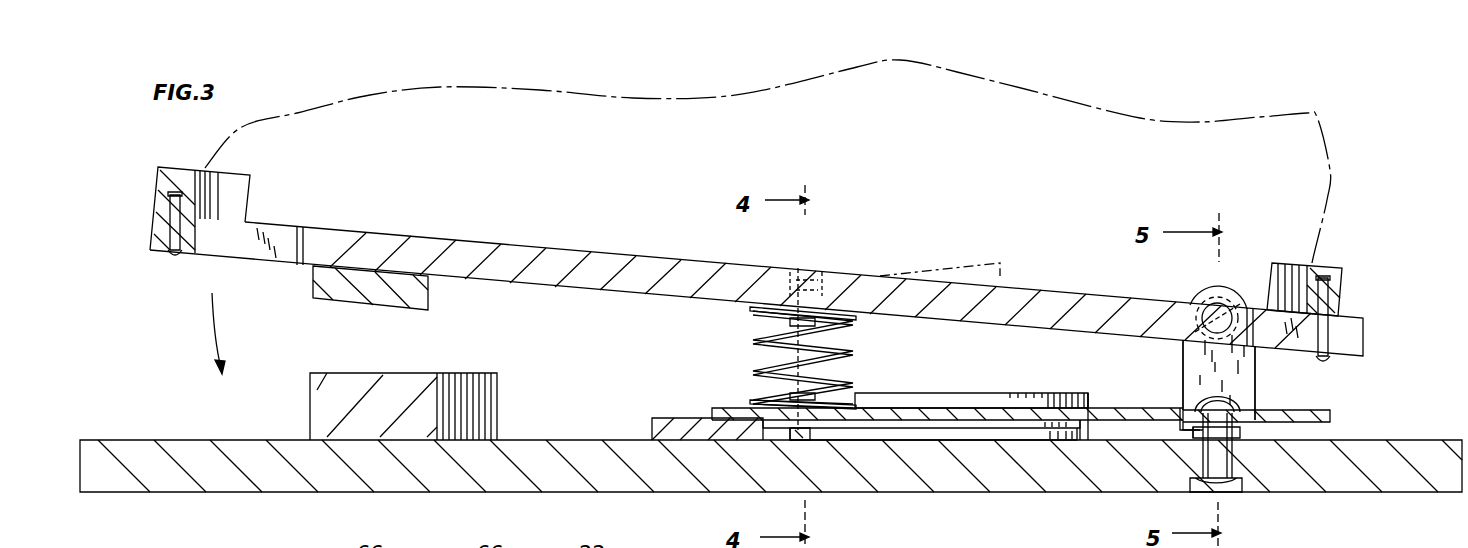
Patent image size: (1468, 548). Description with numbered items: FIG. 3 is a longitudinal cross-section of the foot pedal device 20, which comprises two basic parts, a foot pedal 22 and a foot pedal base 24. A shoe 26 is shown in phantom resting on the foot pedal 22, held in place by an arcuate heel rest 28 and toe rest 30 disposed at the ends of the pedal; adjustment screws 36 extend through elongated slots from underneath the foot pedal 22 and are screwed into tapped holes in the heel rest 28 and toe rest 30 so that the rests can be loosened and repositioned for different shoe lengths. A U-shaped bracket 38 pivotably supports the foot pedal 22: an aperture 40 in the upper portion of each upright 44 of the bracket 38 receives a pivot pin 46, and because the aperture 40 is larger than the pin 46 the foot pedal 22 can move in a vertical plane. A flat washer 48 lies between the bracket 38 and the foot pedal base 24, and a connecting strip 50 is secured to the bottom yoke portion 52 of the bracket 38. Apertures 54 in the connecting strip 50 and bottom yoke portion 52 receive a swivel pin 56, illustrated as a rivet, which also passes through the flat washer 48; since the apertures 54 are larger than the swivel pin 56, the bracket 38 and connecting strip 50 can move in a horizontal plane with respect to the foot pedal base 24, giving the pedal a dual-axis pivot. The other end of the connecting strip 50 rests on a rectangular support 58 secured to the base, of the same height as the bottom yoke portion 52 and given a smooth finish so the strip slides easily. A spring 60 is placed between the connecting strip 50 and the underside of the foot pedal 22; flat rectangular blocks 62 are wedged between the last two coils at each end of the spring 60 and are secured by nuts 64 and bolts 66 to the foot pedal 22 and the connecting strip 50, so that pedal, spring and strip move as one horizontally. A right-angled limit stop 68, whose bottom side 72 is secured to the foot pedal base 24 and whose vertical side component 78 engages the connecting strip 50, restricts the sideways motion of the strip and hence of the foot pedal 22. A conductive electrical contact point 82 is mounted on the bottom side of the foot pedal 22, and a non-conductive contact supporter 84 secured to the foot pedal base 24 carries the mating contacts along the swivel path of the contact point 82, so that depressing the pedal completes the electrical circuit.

The foot pedal device 20 is at (1434, 396).
The foot pedal 22 is at (1024, 315).
The foot pedal base 24 is at (1464, 494).
The shoe 26 is at (1332, 168).
The heel rest 28 is at (1343, 270).
The toe rest 30 is at (251, 196).
The adjustment screws 36 is at (176, 262).
The U-shaped bracket 38 is at (1170, 376).
The aperture 40 is at (1197, 327).
The upright 44 is at (1214, 369).
The pivot pin 46 is at (1258, 374).
The flat washer 48 is at (1193, 438).
The connecting strip 50 is at (1332, 413).
The bottom yoke portion 52 is at (1246, 433).
The apertures 54 is at (1207, 402).
The swivel pin 56 is at (1236, 462).
The support 58 is at (656, 417).
The spring 60 is at (765, 341).
The flat rectangular blocks 62 is at (820, 323).
The nuts 64 is at (840, 343).
The bolts 66 is at (838, 283).
The limit stop 68 is at (1093, 394).
The bottom side 72 is at (1020, 440).
The vertical side component 78 is at (988, 393).
The electrical contact point 82 is at (352, 297).
The contact supporter 84 is at (372, 380).